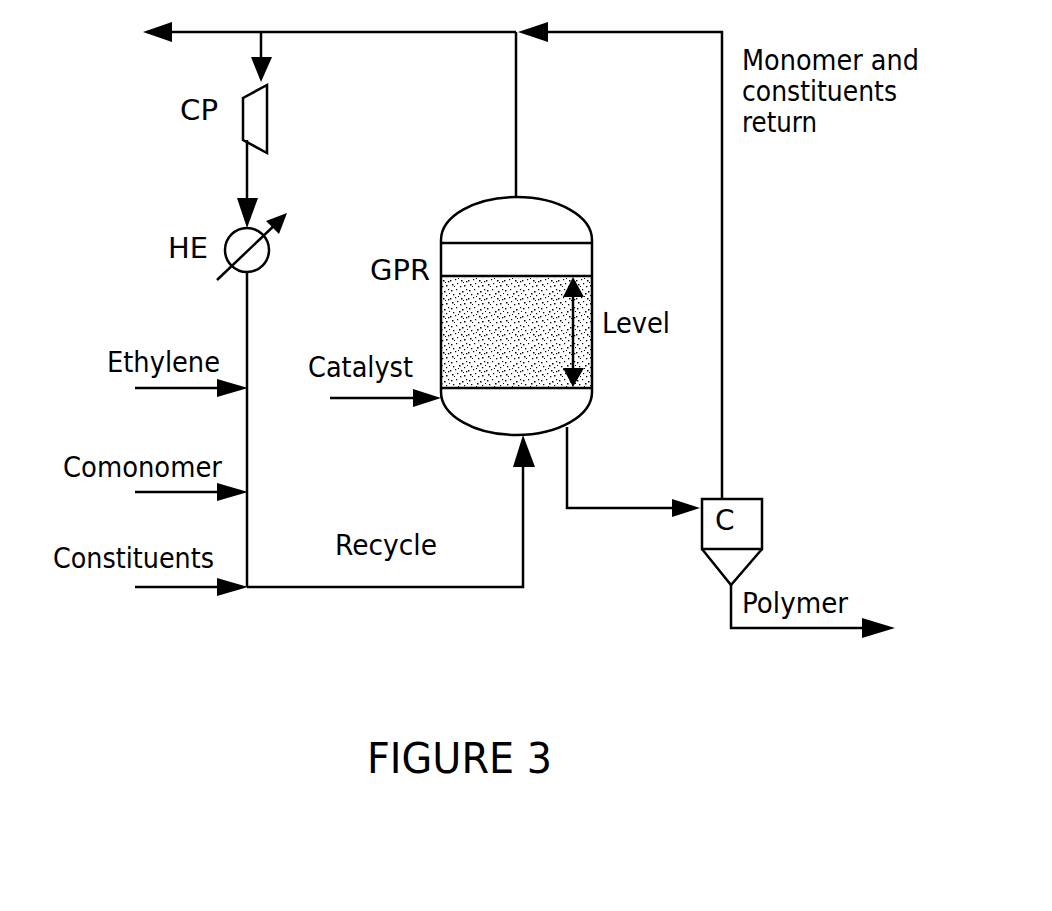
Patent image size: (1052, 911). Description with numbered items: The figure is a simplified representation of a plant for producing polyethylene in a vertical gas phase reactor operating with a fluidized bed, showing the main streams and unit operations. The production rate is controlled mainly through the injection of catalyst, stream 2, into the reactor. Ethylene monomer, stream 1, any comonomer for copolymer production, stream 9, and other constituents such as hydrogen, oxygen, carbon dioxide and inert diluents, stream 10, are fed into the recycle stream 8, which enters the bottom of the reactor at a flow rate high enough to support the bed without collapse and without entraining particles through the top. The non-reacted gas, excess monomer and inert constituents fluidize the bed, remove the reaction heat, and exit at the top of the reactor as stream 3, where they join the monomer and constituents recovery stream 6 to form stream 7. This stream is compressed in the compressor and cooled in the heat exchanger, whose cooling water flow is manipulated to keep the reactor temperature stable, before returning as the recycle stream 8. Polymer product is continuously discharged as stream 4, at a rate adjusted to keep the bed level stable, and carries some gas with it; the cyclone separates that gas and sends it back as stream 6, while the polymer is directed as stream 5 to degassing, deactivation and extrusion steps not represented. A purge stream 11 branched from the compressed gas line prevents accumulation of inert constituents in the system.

The monomer stream 1 is at (191, 397).
The catalyst stream 2 is at (385, 411).
The reactor top gas stream 3 is at (529, 114).
The product discharge stream 4 is at (633, 484).
The polymer stream 5 is at (813, 620).
The monomer and constituents recovery stream 6 is at (638, 260).
The combined recycle gas stream 7 is at (388, 46).
The recycle stream 8 is at (391, 525).
The comonomer stream 9 is at (191, 501).
The constituents stream 10 is at (191, 595).
The purge stream 11 is at (202, 40).